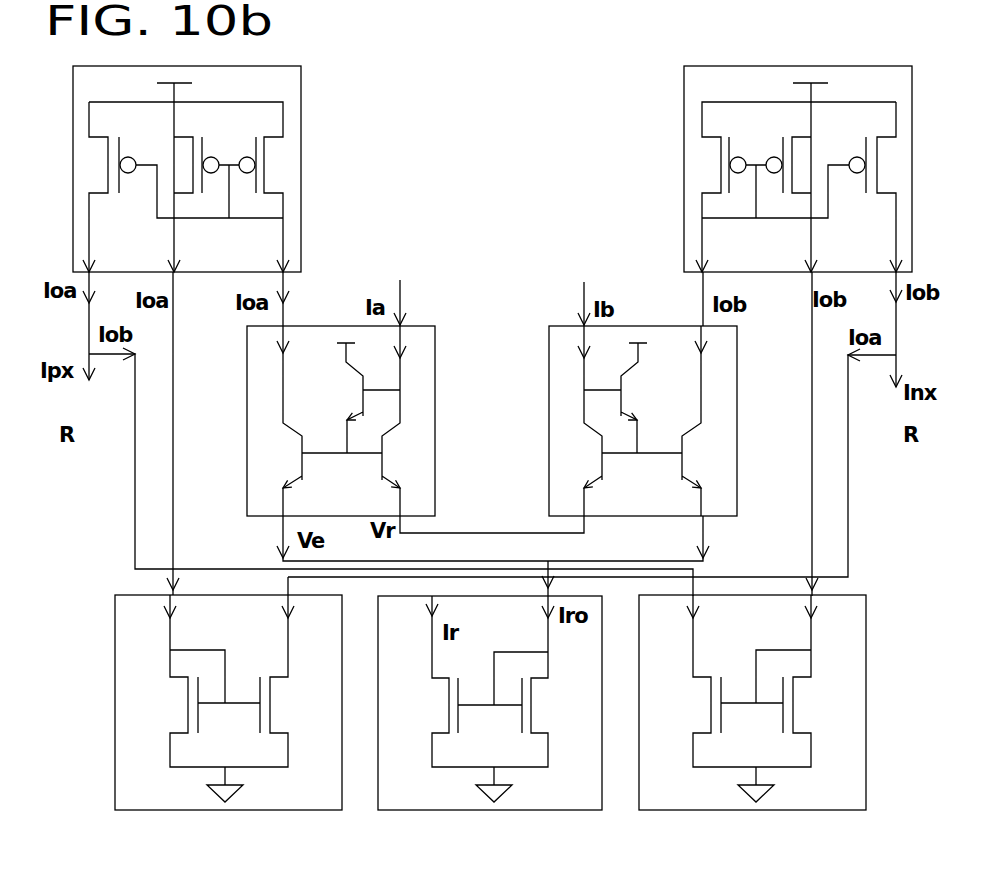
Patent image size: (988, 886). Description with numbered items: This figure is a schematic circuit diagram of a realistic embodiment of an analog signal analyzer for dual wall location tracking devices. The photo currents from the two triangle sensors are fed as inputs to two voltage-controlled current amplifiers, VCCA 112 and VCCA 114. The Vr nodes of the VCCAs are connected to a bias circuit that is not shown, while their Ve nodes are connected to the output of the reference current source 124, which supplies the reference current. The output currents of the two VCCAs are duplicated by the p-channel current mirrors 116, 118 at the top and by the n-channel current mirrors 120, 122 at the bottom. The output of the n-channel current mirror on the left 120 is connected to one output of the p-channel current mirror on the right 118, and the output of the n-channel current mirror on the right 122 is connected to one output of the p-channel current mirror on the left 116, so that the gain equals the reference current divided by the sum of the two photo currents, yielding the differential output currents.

The VCCA 112 is at (315, 341).
The VCCA 114 is at (653, 333).
The p-channel current mirror 116 is at (283, 84).
The p-channel current mirror 118 is at (702, 84).
The n-channel current mirror 120 is at (123, 632).
The n-channel current mirror 122 is at (858, 622).
The reference current source 124 is at (458, 603).